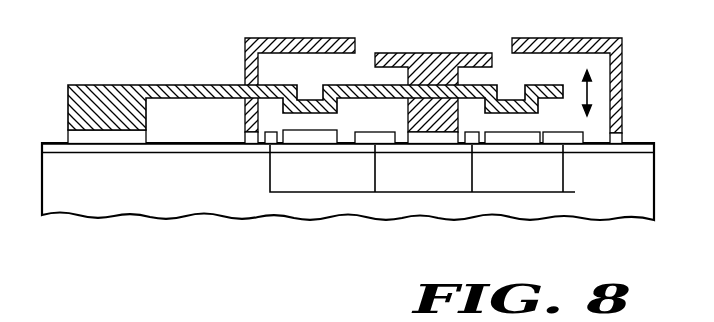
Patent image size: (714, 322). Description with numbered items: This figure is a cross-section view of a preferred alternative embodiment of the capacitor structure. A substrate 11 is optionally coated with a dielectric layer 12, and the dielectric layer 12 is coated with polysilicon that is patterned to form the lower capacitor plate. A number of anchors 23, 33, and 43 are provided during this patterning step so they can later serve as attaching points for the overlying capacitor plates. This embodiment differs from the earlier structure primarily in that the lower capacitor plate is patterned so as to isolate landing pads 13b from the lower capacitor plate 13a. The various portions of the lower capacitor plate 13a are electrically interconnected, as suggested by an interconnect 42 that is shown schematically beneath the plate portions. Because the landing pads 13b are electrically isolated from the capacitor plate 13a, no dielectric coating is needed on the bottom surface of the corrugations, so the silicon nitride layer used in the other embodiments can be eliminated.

The substrate 11 is at (203, 196).
The dielectric layer 12 is at (154, 147).
The anchor 23 is at (96, 135).
The anchor 33 is at (245, 138).
The anchor 43 is at (419, 142).
The lower capacitor plate 13a is at (270, 147).
The landing pads 13b is at (312, 141).
The interconnect 42 is at (575, 192).